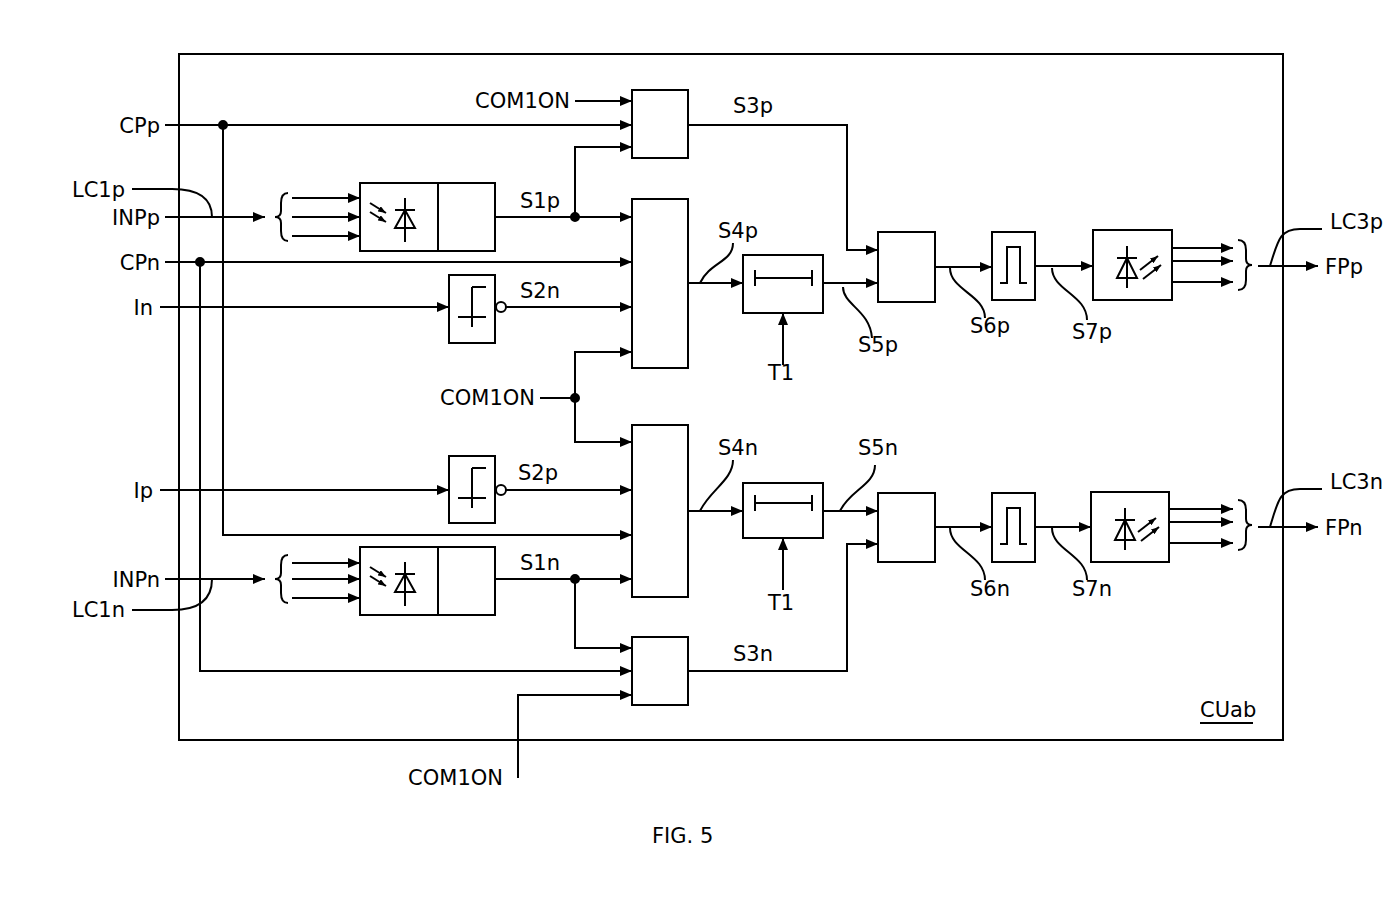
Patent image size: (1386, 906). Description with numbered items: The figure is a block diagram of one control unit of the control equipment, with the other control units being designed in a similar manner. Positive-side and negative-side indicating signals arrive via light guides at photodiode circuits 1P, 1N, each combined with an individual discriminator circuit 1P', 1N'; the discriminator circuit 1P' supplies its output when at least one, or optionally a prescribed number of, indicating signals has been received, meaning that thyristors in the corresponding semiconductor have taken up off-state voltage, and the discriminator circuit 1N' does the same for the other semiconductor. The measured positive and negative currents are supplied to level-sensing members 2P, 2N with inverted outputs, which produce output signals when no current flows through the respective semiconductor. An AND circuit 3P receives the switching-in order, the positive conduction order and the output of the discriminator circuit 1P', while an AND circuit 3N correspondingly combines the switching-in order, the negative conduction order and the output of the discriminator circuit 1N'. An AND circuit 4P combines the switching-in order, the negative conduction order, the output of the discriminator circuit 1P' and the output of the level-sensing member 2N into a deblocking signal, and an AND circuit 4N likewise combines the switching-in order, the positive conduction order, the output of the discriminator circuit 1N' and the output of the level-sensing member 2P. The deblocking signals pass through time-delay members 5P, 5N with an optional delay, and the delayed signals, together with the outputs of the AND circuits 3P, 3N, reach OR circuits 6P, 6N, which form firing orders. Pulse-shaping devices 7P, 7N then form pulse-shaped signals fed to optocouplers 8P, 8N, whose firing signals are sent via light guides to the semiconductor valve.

The photodiode circuit 1P is at (387, 201).
The discriminator circuit 1P' is at (454, 201).
The level-sensing member 2N is at (465, 343).
The level-sensing member 2P is at (466, 456).
The photodiode circuit 1N is at (381, 600).
The discriminator circuit 1N' is at (449, 600).
The AND circuit 3P is at (670, 90).
The AND circuit 4P is at (668, 199).
The time-delay member 5P is at (770, 255).
The OR circuit 6P is at (890, 232).
The pulse-shaping device 7P is at (1005, 232).
The optocoupler 8P is at (1108, 230).
The AND circuit 3N is at (668, 705).
The AND circuit 4N is at (668, 597).
The time-delay member 5N is at (770, 483).
The OR circuit 6N is at (898, 493).
The pulse-shaping device 7N is at (1010, 493).
The optocoupler 8N is at (1108, 492).